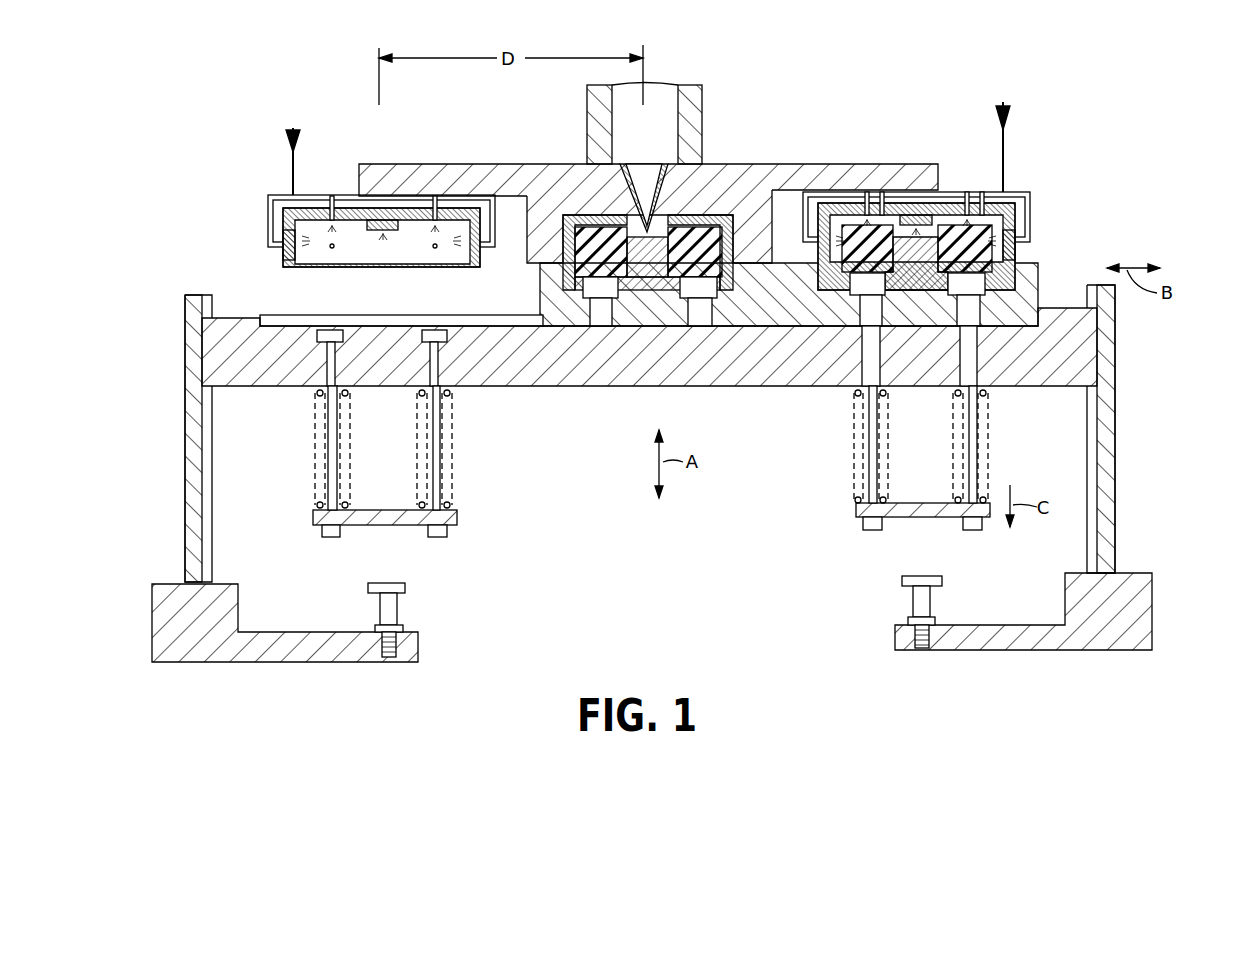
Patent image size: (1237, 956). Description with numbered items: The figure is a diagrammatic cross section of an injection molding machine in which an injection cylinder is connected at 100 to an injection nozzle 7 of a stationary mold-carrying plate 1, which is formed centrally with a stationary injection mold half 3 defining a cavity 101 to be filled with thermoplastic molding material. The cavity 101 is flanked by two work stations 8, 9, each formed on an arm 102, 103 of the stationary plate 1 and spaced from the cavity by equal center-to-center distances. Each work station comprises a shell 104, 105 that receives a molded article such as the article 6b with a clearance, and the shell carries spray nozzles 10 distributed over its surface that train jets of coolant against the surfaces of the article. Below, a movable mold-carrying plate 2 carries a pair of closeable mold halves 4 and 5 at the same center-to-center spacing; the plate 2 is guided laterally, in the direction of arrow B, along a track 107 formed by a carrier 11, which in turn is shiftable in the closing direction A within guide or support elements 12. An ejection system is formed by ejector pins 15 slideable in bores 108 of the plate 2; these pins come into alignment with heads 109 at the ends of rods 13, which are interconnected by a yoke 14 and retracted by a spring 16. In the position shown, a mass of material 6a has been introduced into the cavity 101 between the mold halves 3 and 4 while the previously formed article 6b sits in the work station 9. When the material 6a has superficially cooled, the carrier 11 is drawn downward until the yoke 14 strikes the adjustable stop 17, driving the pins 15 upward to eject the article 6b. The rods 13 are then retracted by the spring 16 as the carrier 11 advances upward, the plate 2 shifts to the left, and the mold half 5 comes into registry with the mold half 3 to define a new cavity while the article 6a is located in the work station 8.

The stationary mold-carrying plate 1 is at (543, 193).
The mold-carrying plate 2 is at (553, 337).
The stationary injection mold half 3 is at (577, 216).
The mold half 4 is at (643, 280).
The mold half 5 is at (817, 288).
The mass of injection-moldable material 6a is at (710, 240).
The injection molded article 6b is at (878, 230).
The injection nozzle 7 is at (657, 187).
The work station 8 is at (315, 210).
The work station 9 is at (985, 205).
The spray nozzles 10 is at (287, 235).
The carrier 11 is at (745, 367).
The guide or support elements 12 is at (188, 362).
The rods 13 is at (435, 465).
The yoke 14 is at (392, 520).
The ejector pins 15 is at (912, 330).
The spring 16 is at (320, 462).
The adjustable stop 17 is at (398, 613).
The injection cylinder connection 100 is at (700, 104).
The mold cavity 101 is at (543, 270).
The arm 102 is at (377, 167).
The arm 103 is at (838, 164).
The shell 104 is at (283, 260).
The shell 105 is at (1015, 247).
The track 107 is at (320, 323).
The bores 108 is at (602, 281).
The heads 109 is at (830, 273).